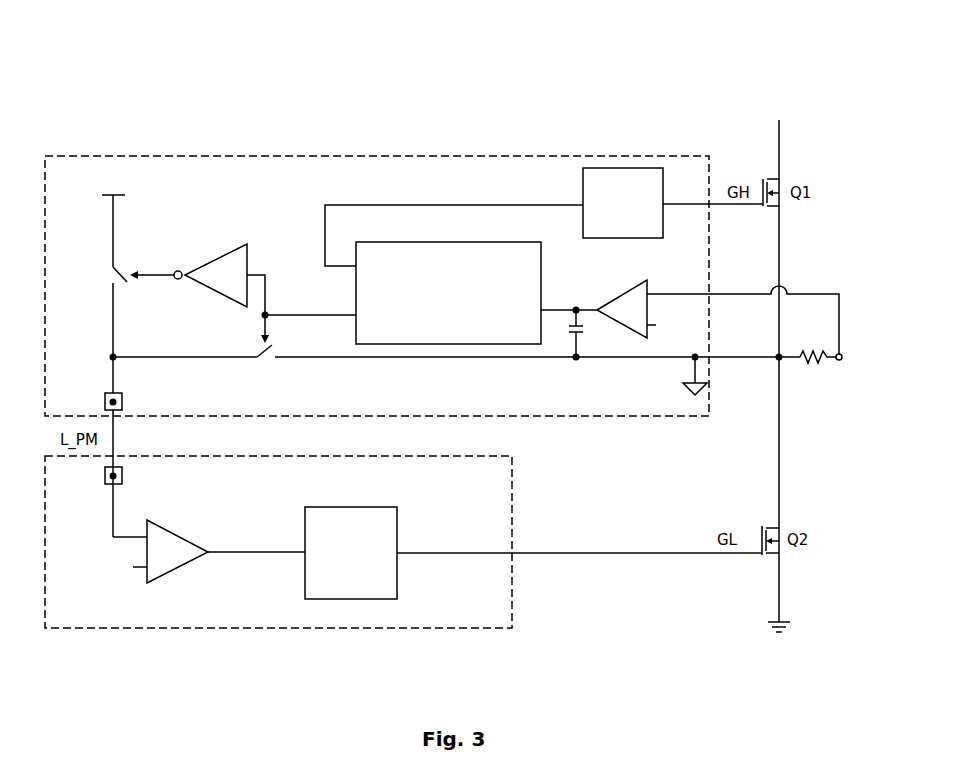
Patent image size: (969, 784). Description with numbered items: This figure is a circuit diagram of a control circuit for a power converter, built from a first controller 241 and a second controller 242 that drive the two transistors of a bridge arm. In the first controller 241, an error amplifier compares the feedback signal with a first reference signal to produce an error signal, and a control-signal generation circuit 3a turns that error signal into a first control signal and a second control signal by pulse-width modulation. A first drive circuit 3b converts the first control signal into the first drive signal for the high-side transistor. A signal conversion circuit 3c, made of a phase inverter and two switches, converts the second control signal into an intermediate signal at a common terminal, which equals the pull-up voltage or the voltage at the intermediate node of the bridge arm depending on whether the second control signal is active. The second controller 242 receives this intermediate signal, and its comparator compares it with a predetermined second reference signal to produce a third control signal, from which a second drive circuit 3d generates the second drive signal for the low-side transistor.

The first controller 241 is at (448, 155).
The second controller 242 is at (275, 628).
The control-signal generation circuit 3a is at (400, 240).
The first drive circuit 3b is at (620, 238).
The signal conversion circuit 3c is at (147, 230).
The second drive circuit 3d is at (335, 503).